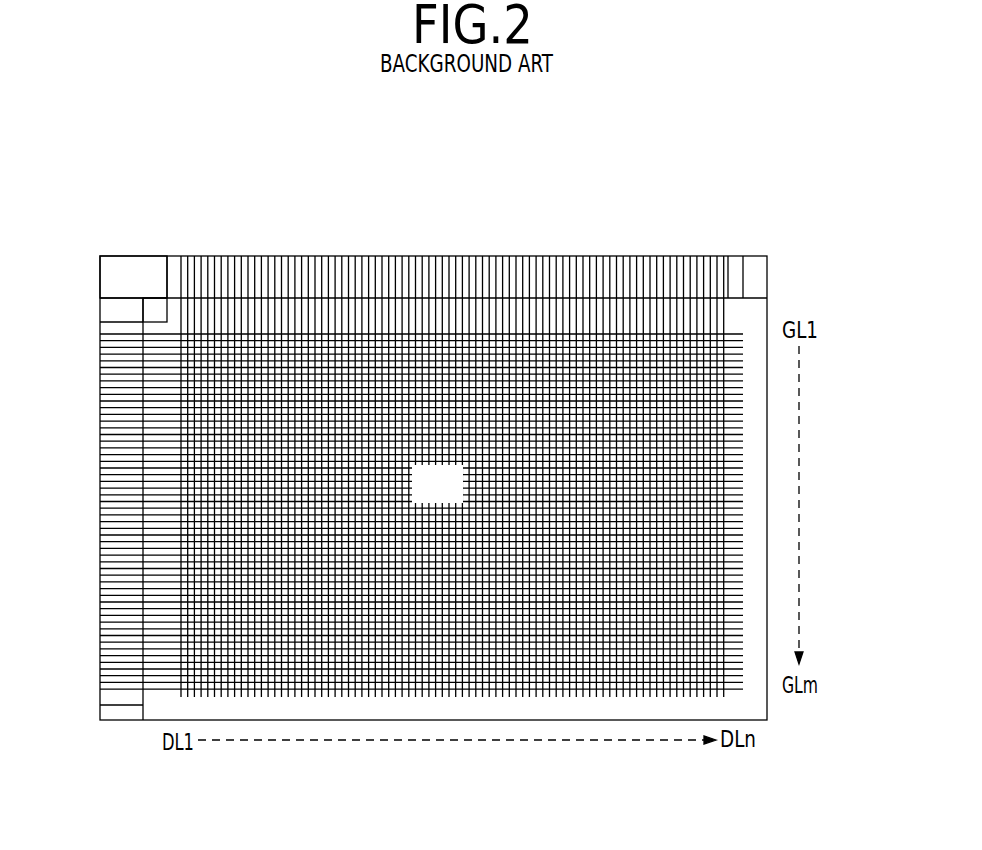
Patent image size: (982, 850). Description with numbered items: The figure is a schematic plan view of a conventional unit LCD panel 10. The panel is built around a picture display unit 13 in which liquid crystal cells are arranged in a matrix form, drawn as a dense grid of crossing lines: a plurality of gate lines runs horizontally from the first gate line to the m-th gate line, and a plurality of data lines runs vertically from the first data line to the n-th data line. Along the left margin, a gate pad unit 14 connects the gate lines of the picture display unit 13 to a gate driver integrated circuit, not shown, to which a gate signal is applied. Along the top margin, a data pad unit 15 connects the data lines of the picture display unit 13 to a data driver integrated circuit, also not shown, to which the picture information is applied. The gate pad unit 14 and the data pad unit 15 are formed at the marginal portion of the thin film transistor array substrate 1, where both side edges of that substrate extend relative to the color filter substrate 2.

The thin film transistor array substrate 1 is at (125, 272).
The color filter substrate 2 is at (160, 312).
The unit LCD panel 10 is at (785, 711).
The picture display unit 13 is at (450, 495).
The gate pad unit 14 is at (90, 702).
The data pad unit 15 is at (742, 247).